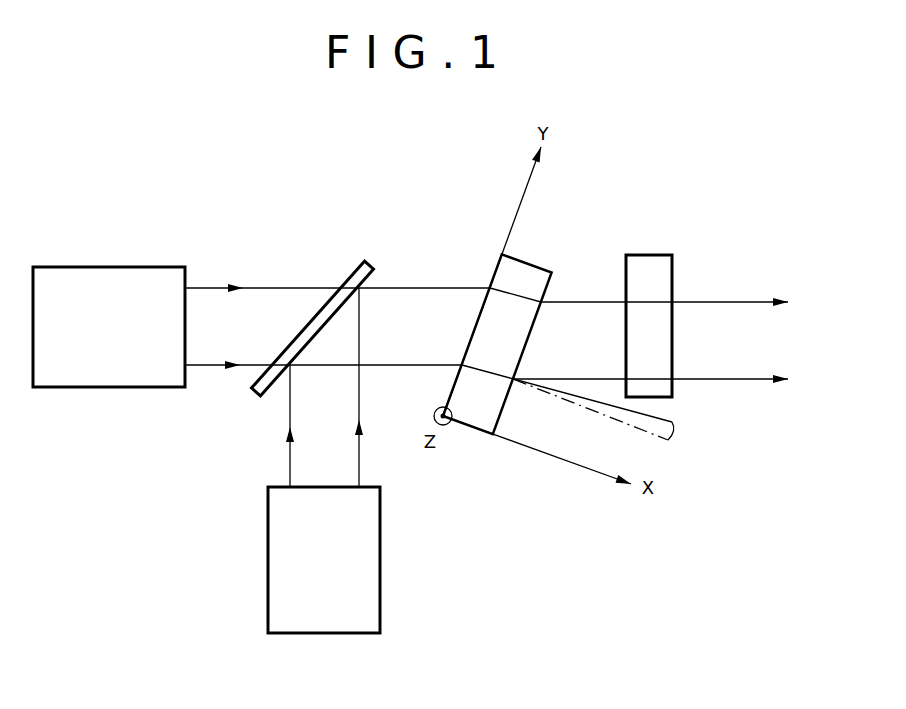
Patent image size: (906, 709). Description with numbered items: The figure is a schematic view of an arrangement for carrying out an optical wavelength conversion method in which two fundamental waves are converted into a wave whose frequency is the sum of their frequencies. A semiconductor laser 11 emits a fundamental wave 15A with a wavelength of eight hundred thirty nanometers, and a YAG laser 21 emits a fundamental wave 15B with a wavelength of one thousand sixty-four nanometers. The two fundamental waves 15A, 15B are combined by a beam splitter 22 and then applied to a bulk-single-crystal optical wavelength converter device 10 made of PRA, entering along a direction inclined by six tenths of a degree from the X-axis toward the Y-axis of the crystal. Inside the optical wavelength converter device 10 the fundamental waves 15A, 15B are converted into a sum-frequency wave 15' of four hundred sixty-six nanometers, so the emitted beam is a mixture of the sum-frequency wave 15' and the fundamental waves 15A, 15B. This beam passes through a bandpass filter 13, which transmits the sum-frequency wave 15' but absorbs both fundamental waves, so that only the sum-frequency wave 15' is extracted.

The semiconductor laser 11 is at (110, 287).
The fundamental wave 15A is at (268, 287).
The fundamental wave 15B is at (290, 409).
The sum-frequency wave 15' is at (656, 281).
The beam splitter 22 is at (366, 260).
The optical wavelength converter device 10 is at (502, 275).
The bandpass filter 13 is at (670, 257).
The YAG laser 21 is at (280, 558).